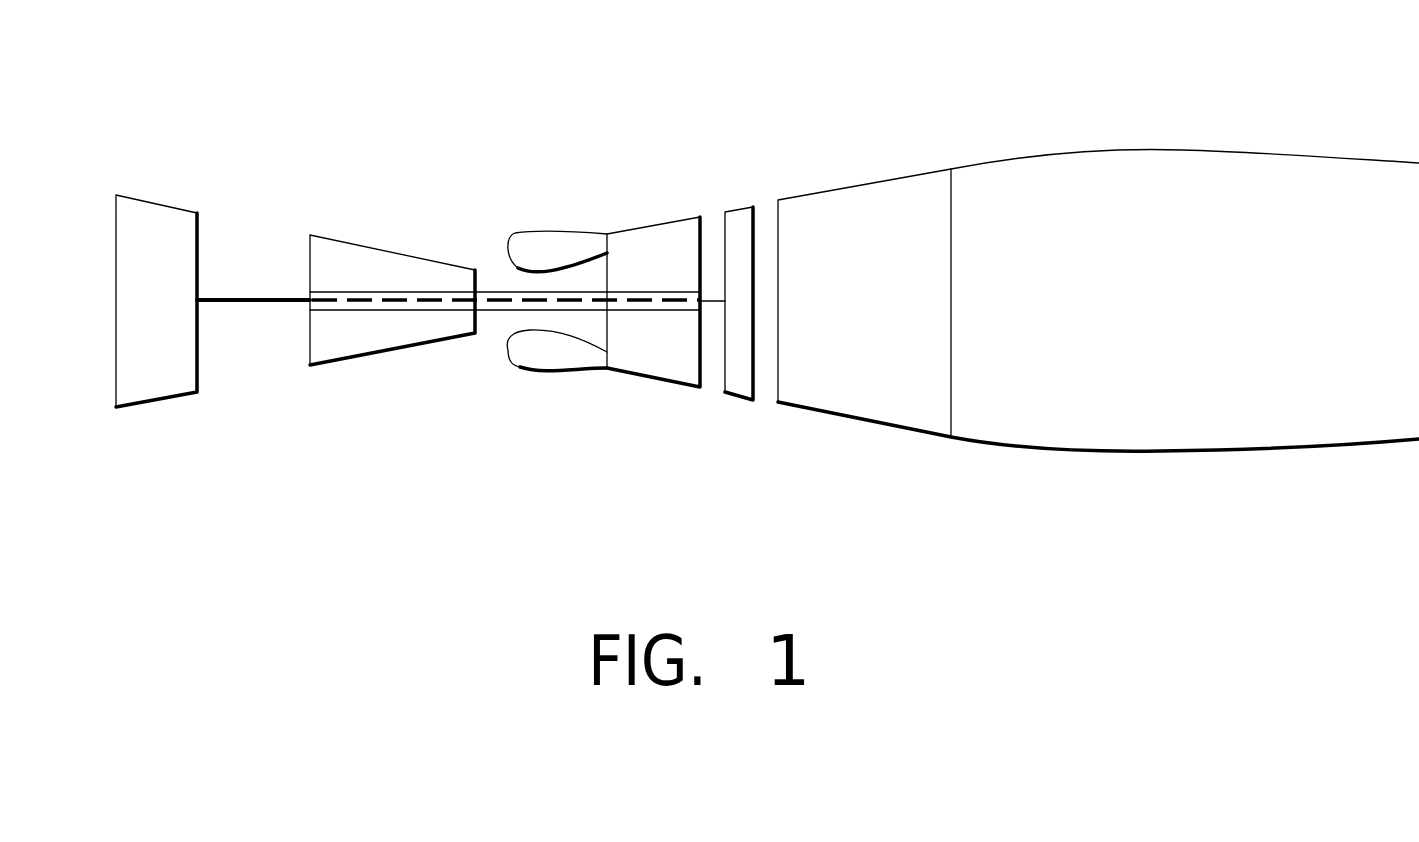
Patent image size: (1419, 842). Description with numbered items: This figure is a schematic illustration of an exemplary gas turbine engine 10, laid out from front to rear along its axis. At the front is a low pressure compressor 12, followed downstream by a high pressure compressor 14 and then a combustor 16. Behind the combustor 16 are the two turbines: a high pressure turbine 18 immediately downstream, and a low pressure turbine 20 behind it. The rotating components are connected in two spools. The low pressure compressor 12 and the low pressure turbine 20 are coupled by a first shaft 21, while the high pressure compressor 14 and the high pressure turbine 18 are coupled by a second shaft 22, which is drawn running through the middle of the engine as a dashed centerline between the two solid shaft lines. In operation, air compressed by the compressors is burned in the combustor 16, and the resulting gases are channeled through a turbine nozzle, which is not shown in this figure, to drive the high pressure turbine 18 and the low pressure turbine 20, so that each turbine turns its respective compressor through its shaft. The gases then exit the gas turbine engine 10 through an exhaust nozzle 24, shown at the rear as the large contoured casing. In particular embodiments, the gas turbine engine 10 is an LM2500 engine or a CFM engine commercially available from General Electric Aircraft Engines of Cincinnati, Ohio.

The gas turbine engine 10 is at (983, 88).
The low pressure compressor 12 is at (180, 393).
The high pressure compressor 14 is at (420, 350).
The combustor 16 is at (550, 373).
The high pressure turbine 18 is at (670, 387).
The low pressure turbine 20 is at (738, 397).
The first shaft 21 is at (225, 298).
The second shaft 22 is at (492, 288).
The exhaust nozzle 24 is at (1093, 453).